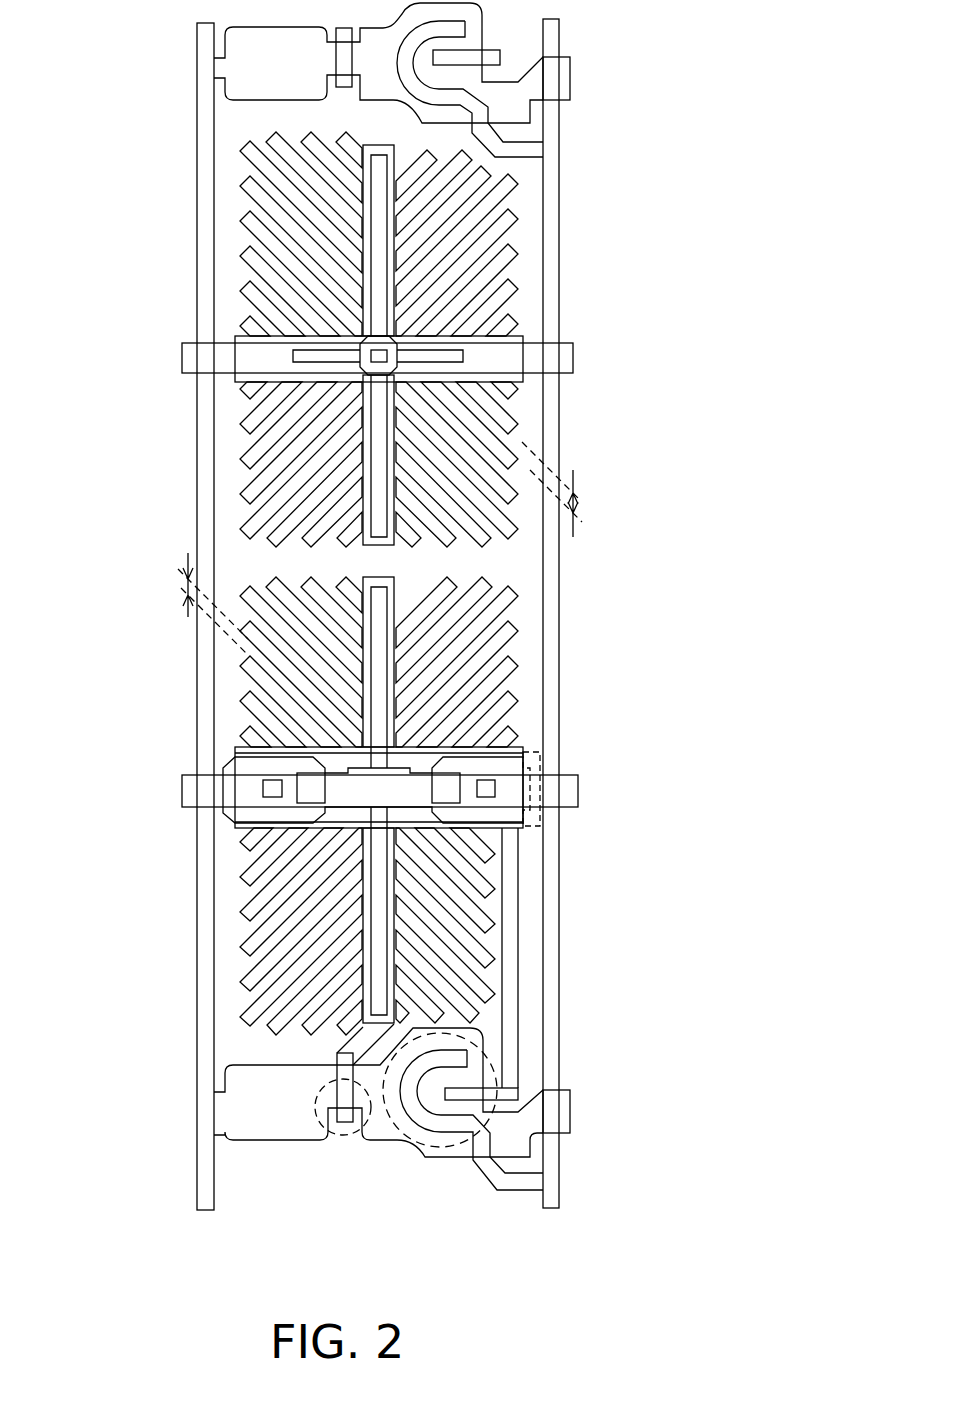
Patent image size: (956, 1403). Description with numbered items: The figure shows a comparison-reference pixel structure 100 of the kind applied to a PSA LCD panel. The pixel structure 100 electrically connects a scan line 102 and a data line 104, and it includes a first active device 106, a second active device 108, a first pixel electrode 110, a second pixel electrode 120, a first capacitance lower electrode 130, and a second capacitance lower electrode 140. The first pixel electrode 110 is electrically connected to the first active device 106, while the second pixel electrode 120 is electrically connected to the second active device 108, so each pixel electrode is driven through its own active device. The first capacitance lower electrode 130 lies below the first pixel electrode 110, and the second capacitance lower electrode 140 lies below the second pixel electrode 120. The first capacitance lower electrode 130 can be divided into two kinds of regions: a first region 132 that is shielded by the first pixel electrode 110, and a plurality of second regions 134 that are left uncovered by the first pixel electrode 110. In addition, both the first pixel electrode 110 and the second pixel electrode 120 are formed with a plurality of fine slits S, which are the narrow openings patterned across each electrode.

The pixel structure 100 is at (702, 1278).
The scan line 102 is at (380, 1142).
The data line 104 is at (557, 1040).
The first active device 106 is at (440, 1148).
The second active device 108 is at (340, 1147).
The first pixel electrode 110 is at (268, 963).
The second pixel electrode 120 is at (260, 412).
The first capacitance lower electrode 130 is at (566, 790).
The first region 132 is at (418, 792).
The second regions 134 is at (531, 830).
The second capacitance lower electrode 140 is at (536, 355).
The fine slits S is at (576, 514).